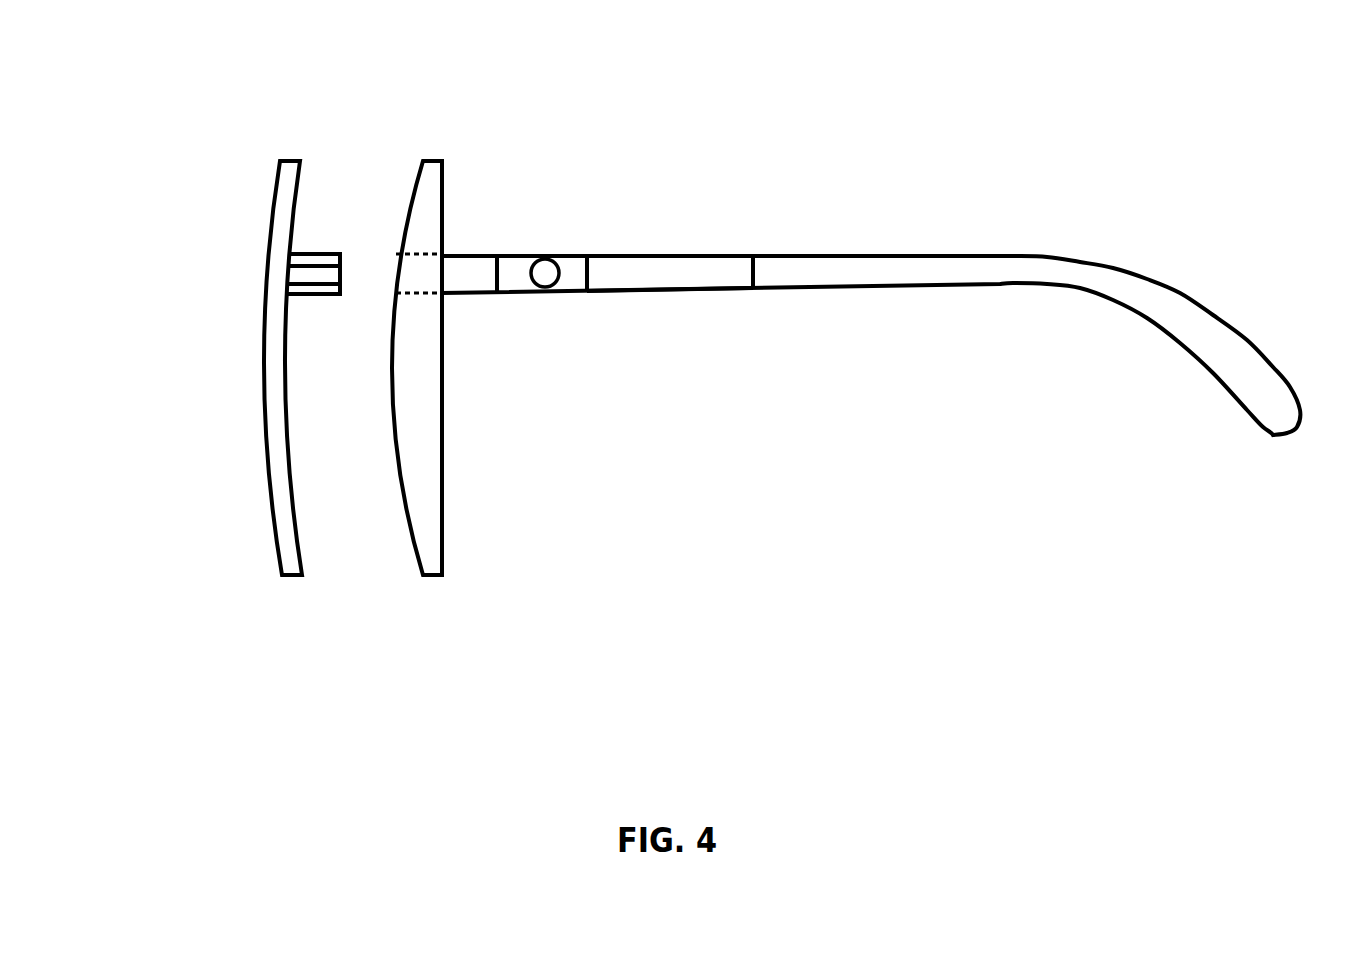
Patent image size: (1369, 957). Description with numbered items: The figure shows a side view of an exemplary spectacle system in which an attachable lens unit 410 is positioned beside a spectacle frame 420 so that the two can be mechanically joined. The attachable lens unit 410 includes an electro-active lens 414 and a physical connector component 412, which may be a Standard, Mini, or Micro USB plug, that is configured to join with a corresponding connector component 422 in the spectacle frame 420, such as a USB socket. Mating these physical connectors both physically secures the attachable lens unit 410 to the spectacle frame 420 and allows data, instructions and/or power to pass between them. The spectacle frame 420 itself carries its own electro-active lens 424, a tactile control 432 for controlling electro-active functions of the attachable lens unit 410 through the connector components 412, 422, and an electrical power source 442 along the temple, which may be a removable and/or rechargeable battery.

The attachable lens unit 410 is at (283, 368).
The physical connector component 412 is at (311, 253).
The electro-active lens 414 is at (280, 577).
The spectacle frame 420 is at (846, 368).
The connector component 422 is at (425, 250).
The electro-active lens 424 is at (443, 370).
The tactile control 432 is at (546, 274).
The electrical power source 442 is at (654, 268).